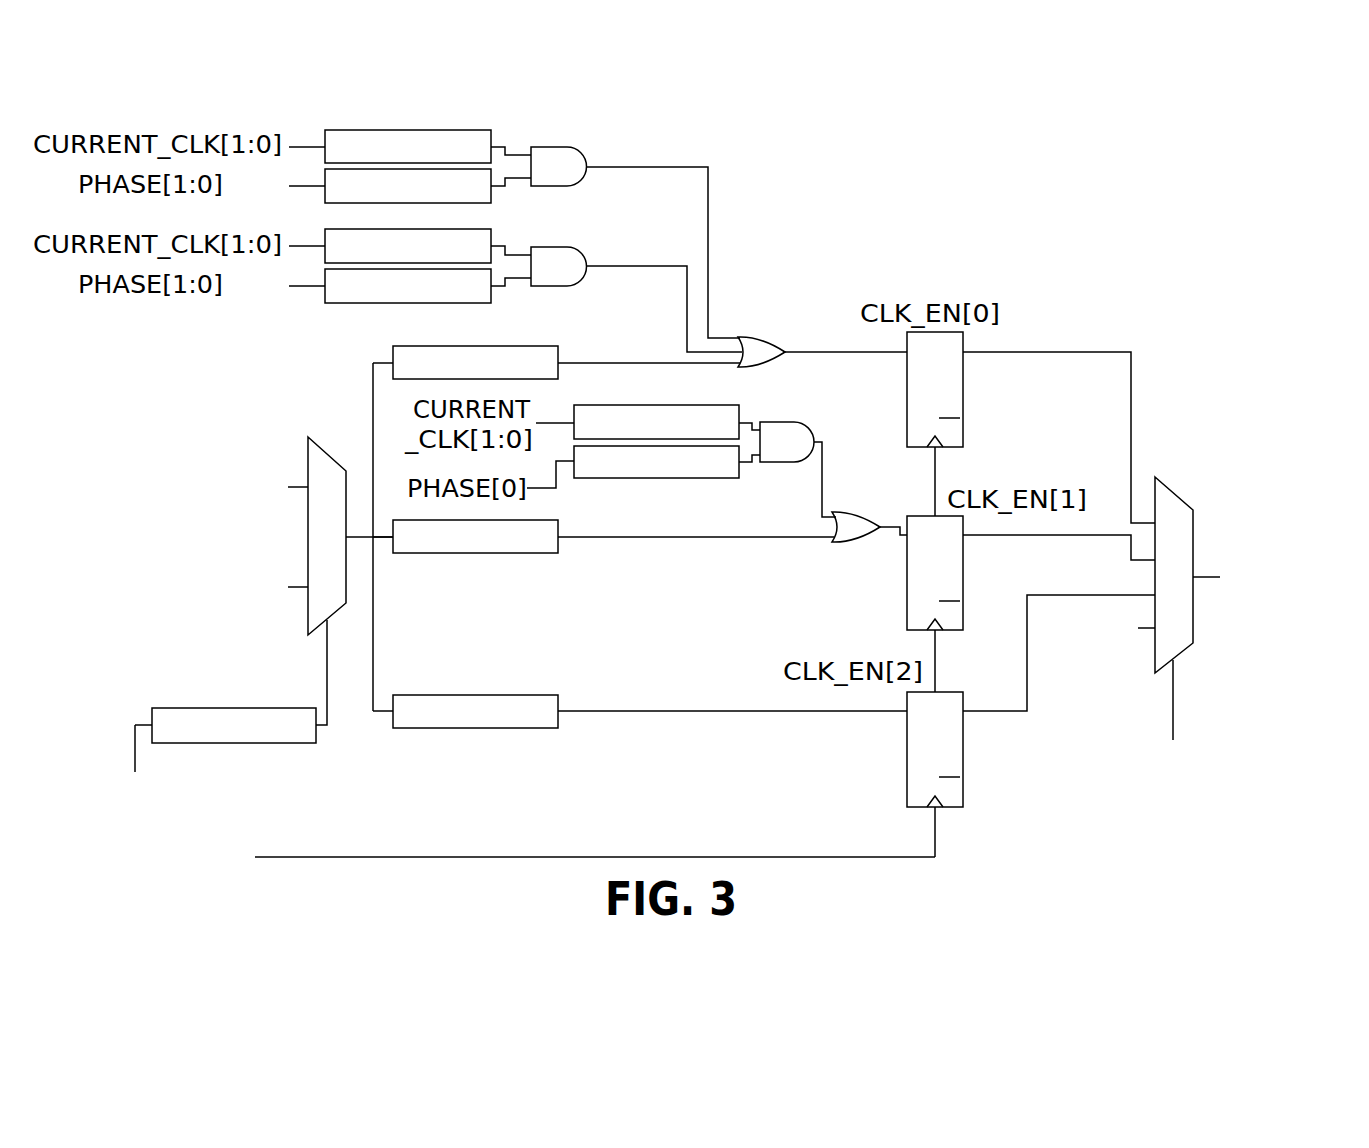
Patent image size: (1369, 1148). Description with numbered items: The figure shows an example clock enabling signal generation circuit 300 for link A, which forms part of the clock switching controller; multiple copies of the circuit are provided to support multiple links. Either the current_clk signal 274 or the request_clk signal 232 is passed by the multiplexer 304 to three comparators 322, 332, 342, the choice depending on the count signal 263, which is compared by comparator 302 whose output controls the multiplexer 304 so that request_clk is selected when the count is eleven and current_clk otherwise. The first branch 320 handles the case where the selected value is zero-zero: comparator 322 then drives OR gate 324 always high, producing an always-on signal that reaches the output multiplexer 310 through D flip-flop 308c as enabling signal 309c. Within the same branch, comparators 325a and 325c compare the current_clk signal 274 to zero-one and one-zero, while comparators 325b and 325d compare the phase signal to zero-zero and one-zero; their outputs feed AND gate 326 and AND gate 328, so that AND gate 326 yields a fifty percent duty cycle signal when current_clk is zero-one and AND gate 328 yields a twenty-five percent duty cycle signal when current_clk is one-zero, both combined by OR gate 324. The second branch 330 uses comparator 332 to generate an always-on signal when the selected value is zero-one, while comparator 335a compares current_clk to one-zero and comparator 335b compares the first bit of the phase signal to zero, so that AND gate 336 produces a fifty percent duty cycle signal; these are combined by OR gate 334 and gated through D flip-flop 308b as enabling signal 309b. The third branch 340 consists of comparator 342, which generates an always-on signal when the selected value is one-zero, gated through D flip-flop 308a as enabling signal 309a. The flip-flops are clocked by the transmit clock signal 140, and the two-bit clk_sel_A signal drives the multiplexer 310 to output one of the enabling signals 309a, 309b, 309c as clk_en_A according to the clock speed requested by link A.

The clock enabling signal generator 300 is at (1310, 114).
The transmit clock signal (TXCLK) 140 is at (290, 858).
The request_clk signal 232 is at (293, 580).
The count signal 263 is at (141, 710).
The current_clk signal 274 is at (293, 478).
The comparator 302 is at (233, 743).
The multiplexer 304 is at (318, 440).
The D flip-flop 308a is at (963, 757).
The D flip-flop 308b is at (907, 590).
The D flip-flop 308c is at (963, 392).
The enabling signal clk_en[2] 309a is at (1027, 688).
The enabling signal clk_en[1] 309b is at (1078, 538).
The enabling signal clk_en[0] 309c is at (1077, 352).
The multiplexer 310 is at (1175, 495).
The first branch 320 is at (1008, 260).
The comparator 322 is at (545, 346).
The OR gate 324 is at (745, 337).
The comparator 325a is at (404, 130).
The comparator 325b is at (491, 197).
The comparator 325c is at (491, 233).
The comparator 325d is at (362, 303).
The AND gate 326 is at (540, 147).
The AND gate 328 is at (582, 283).
The second branch 330 is at (1010, 455).
The comparator 332 is at (475, 553).
The OR gate 334 is at (840, 512).
The comparator 335a is at (620, 405).
The comparator 335b is at (630, 478).
The AND gate 336 is at (772, 422).
The third branch 340 is at (1010, 826).
The comparator 342 is at (475, 728).